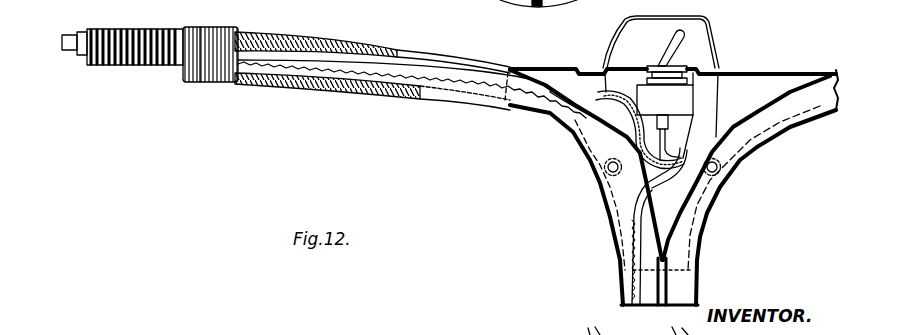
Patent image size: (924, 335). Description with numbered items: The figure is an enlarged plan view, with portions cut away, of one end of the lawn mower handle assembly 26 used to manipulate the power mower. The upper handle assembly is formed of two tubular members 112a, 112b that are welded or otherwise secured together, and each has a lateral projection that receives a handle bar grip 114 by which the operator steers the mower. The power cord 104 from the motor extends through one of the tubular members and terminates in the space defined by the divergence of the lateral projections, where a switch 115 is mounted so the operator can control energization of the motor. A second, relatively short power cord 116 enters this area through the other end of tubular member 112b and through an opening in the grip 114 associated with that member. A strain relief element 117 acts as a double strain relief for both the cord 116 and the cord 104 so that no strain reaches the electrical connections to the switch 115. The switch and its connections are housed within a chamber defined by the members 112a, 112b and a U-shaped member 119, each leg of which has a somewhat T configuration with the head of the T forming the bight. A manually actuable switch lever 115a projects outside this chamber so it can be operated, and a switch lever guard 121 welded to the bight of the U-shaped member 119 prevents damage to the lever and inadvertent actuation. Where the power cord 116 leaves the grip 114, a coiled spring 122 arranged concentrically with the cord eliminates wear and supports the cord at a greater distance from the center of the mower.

The coiled spring 122 is at (143, 66).
The handle bar grip 114 is at (298, 94).
The power cord 116 is at (473, 103).
The U-shaped member 119 is at (552, 68).
The switch lever guard 121 is at (708, 24).
The switch lever 115a is at (688, 38).
The switch 115 is at (685, 97).
The strain relief element 117 is at (598, 137).
The power cord 104 is at (620, 235).
The handle assembly 26 is at (620, 268).
The tubular member 112b is at (620, 297).
The tubular member 112a is at (697, 288).